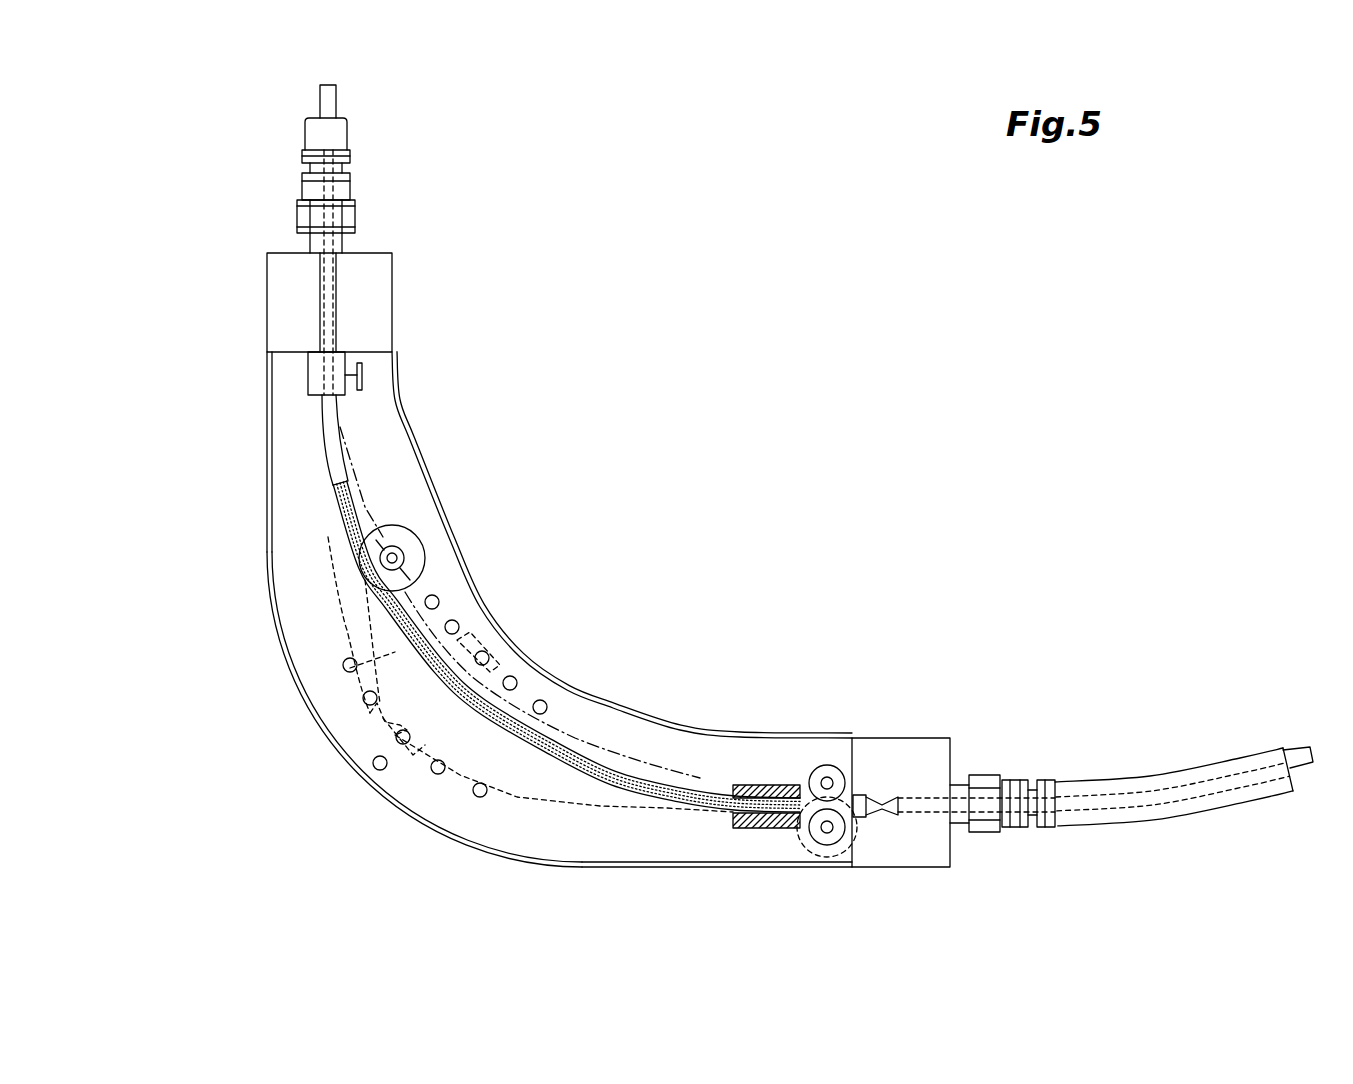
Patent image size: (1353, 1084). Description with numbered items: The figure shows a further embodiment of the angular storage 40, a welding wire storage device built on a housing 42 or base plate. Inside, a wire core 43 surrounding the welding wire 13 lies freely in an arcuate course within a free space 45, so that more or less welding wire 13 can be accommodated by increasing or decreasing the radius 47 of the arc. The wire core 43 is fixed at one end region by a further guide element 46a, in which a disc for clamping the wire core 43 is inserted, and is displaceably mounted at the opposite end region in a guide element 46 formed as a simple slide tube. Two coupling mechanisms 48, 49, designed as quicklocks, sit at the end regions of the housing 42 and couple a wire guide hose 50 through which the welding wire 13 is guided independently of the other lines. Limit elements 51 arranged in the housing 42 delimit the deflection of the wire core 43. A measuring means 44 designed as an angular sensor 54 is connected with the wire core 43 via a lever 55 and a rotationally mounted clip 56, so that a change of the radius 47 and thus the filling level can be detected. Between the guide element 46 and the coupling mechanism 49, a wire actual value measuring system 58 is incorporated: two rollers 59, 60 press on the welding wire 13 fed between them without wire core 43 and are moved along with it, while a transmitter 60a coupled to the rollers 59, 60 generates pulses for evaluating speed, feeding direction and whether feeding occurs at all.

The welding wire 13 is at (343, 527).
The angular storage 40 is at (950, 325).
The housing 42 is at (305, 618).
The wire core 43 is at (330, 100).
The measuring means 44 is at (438, 525).
The free space 45 is at (545, 825).
The guide element 46 is at (763, 785).
The further guide element 46a is at (330, 378).
The radius 47 is at (443, 608).
The coupling mechanism 48 is at (275, 184).
The coupling mechanism 49 is at (1010, 748).
The wire guide hose 50 is at (345, 132).
The limit elements 51 is at (437, 600).
The angular sensor 54 is at (400, 537).
The lever 55 is at (430, 640).
The rotationally mounted clip 56 is at (497, 680).
The wire actual value measuring system 58 is at (845, 742).
The roller 59 is at (827, 782).
The roller 60 is at (827, 835).
The transmitter 60a is at (810, 843).